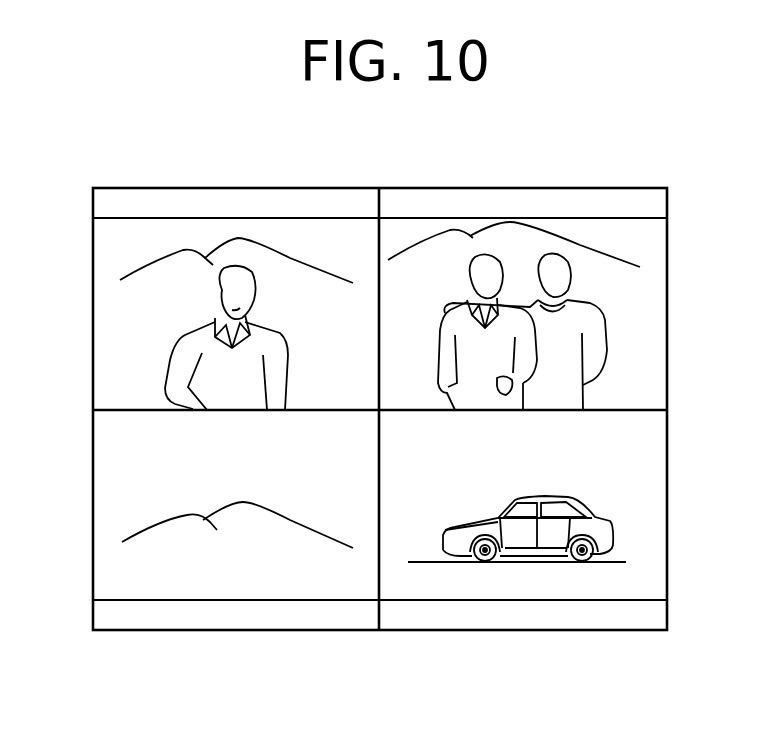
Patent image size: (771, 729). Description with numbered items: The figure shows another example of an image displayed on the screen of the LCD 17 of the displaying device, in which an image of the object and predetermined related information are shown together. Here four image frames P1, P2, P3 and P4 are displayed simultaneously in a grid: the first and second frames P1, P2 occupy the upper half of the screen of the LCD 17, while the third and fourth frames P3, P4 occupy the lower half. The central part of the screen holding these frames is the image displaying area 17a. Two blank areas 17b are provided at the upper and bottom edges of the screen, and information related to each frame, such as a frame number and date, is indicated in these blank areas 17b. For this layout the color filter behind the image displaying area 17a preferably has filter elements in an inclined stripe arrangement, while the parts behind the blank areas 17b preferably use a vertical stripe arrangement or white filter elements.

The LCD 17 is at (80, 262).
The image displaying area 17a is at (683, 213).
The blank area 17b is at (203, 202).
The first image frame P1 is at (120, 345).
The second image frame P2 is at (643, 242).
The third image frame P3 is at (115, 557).
The fourth image frame P4 is at (647, 582).